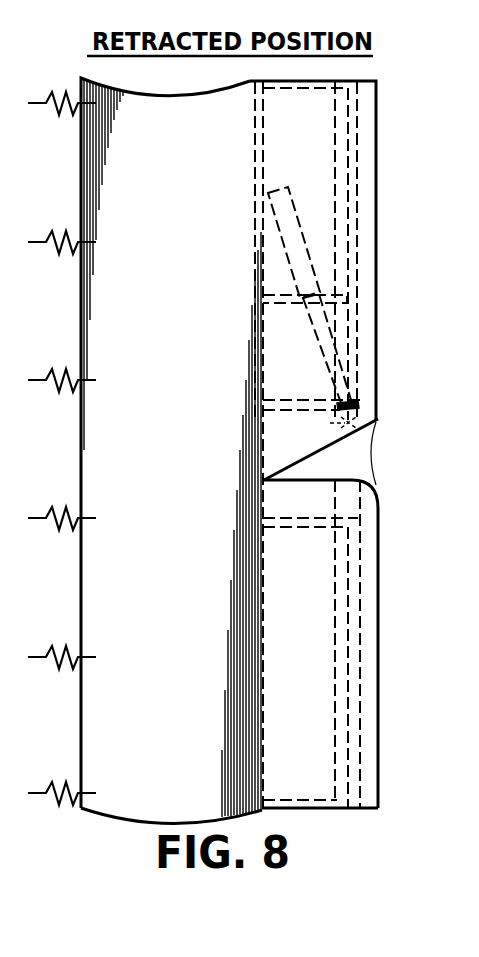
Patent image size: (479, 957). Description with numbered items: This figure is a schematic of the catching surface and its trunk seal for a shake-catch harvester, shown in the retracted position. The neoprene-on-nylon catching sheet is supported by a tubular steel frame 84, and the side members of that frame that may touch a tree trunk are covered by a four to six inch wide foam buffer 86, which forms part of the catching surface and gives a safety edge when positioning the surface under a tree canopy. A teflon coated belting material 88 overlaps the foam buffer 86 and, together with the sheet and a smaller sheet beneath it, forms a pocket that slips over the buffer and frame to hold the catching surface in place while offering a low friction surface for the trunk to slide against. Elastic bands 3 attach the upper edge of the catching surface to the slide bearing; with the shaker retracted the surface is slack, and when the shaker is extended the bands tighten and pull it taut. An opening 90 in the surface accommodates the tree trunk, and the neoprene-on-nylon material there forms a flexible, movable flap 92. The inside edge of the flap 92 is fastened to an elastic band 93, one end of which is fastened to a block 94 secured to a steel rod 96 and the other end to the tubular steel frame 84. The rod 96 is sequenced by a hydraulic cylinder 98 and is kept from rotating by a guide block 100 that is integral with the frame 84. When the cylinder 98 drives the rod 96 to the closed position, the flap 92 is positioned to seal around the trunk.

The elastic bands 3 is at (45, 105).
The tubular steel frame 84 is at (258, 648).
The foam buffer 86 is at (377, 221).
The teflon coated belting material 88 is at (378, 668).
The opening 90 is at (380, 465).
The flexible movable flap 92 is at (365, 420).
The elastic band 93 is at (331, 446).
The block 94 is at (347, 426).
The steel rod 96 is at (318, 333).
The hydraulic cylinder 98 is at (268, 245).
The guide block 100 is at (340, 397).